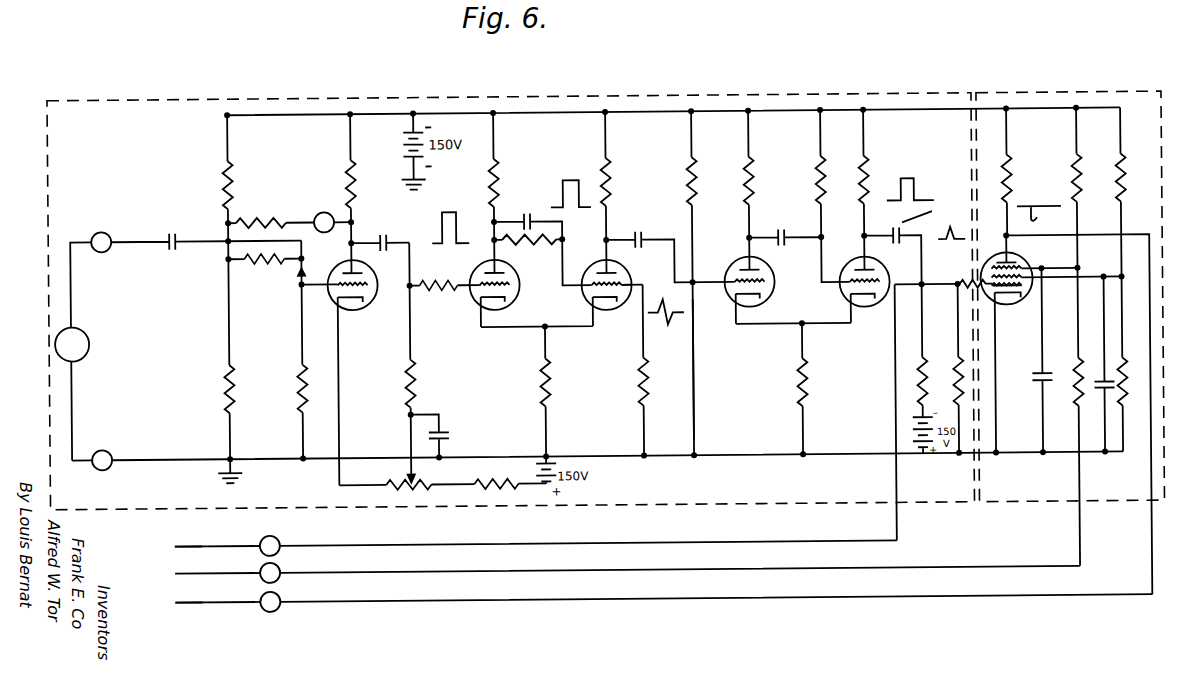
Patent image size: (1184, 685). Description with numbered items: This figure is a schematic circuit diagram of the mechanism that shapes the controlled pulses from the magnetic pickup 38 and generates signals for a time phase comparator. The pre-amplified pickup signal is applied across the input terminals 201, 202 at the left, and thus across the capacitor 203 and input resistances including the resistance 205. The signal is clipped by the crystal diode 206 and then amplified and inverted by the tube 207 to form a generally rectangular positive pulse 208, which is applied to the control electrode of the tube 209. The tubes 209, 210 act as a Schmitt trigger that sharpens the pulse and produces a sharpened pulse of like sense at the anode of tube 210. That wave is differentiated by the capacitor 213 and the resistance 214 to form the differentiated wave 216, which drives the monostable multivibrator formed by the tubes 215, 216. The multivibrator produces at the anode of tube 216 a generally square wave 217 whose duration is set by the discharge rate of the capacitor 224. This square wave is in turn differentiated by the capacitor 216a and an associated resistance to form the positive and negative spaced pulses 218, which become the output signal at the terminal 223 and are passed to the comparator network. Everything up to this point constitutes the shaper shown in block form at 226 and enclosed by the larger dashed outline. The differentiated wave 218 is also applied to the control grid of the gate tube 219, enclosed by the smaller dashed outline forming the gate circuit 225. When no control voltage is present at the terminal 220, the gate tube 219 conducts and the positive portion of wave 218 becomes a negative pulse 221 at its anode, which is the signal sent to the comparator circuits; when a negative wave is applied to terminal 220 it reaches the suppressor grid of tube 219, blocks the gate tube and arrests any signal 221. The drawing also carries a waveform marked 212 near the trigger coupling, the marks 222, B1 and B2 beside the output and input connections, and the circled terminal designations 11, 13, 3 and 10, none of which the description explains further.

The magnetic pickup 38 is at (89, 340).
The input terminal 201 is at (91, 346).
The input terminal 202 is at (98, 469).
The capacitor 203 is at (206, 247).
The resistance 205 is at (216, 412).
The crystal diode 206 is at (301, 302).
The tube 207 is at (358, 371).
The rectangular positive pulse 208 is at (410, 262).
The tube 209 is at (539, 291).
The tube 210 is at (634, 278).
The coupling capacitor 212 is at (596, 237).
The capacitor 213 is at (645, 237).
The resistance 214 is at (711, 369).
The tube 215 is at (802, 290).
The tube 216 is at (684, 288).
The capacitor 216a is at (935, 213).
The square wave 217 is at (884, 234).
The positive and negative spaced pulses 218 is at (950, 244).
The gate tube 219 is at (1051, 343).
The terminal 220 is at (627, 567).
The negative pulse 221 is at (1037, 236).
The output terminal 2 222 is at (663, 607).
The terminal 223 is at (536, 531).
The capacitor 224 is at (799, 249).
The gate circuit 225 is at (1015, 96).
The shaper 226 is at (600, 96).
The terminal 11 is at (332, 222).
The terminal 13 is at (276, 534).
The terminal 3 is at (258, 570).
The terminal 10 is at (280, 609).
The terminal B1 is at (257, 600).
The terminal B2 is at (258, 538).